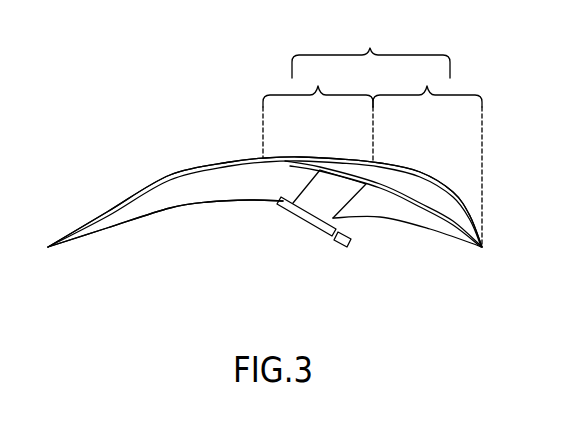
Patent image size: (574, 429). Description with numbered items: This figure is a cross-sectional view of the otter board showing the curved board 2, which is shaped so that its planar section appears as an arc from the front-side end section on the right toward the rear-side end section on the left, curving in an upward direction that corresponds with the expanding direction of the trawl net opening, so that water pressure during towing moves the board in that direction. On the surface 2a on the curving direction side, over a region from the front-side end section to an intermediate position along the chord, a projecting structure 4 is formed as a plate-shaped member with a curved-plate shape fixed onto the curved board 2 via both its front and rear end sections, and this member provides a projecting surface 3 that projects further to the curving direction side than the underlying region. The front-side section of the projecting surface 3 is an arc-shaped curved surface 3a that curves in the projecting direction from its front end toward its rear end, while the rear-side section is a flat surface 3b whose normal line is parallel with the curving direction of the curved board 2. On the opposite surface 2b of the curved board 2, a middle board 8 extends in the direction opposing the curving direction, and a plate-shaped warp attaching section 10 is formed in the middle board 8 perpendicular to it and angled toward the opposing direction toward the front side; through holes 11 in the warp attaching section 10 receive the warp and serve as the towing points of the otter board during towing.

The curved board 2 is at (101, 213).
The surface on the curving direction side 2a is at (173, 173).
The surface on the side opposing the curving direction 2b is at (137, 198).
The projecting surface 3 is at (382, 41).
The curved surface 3a is at (427, 155).
The flat surface 3b is at (318, 112).
The projecting structure 4 is at (440, 184).
The middle board 8 is at (208, 202).
The warp attaching section 10 is at (307, 222).
The through holes 11 is at (335, 240).